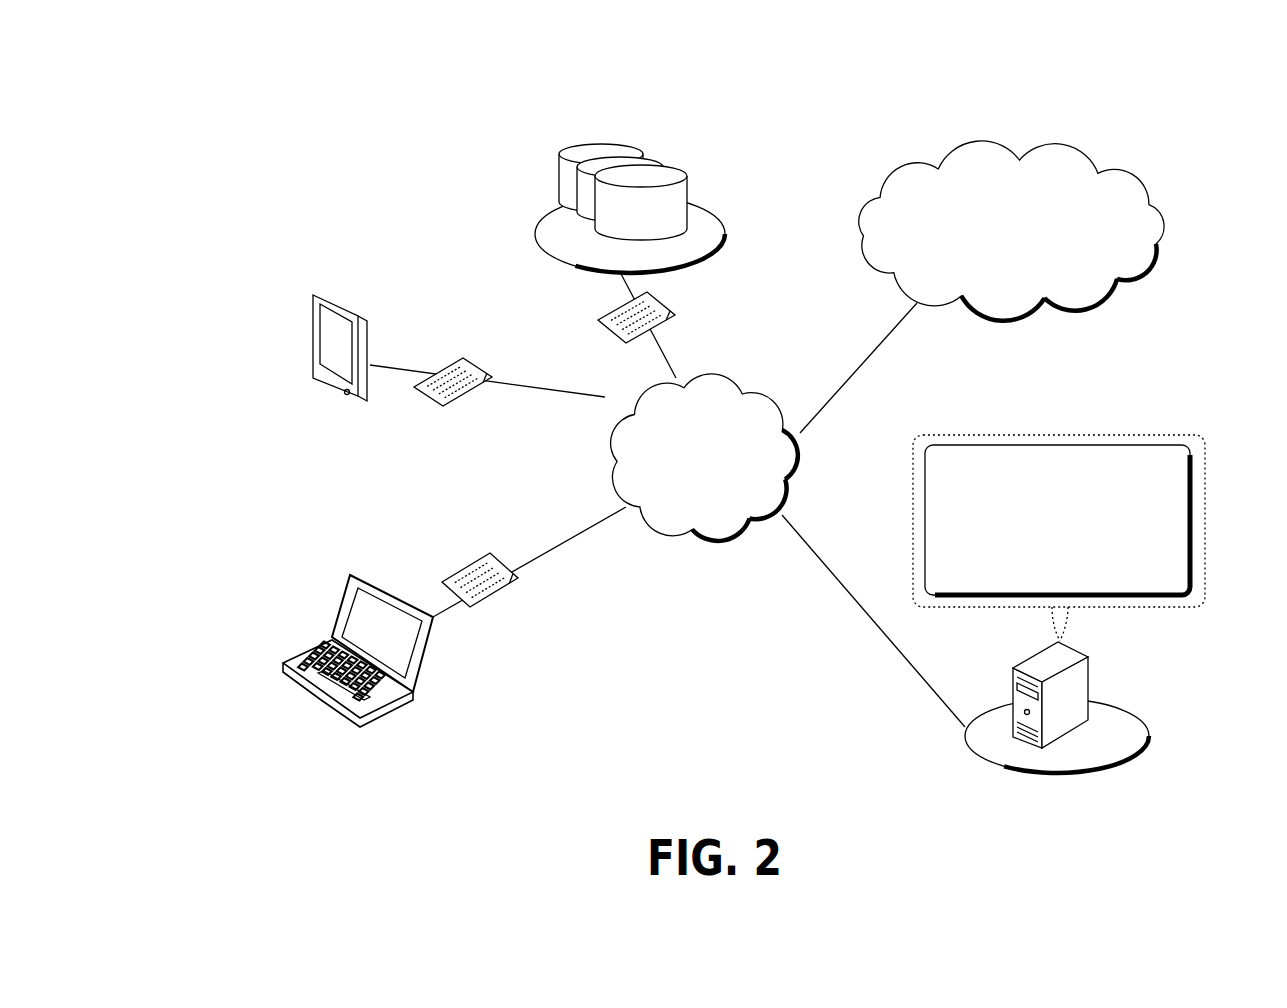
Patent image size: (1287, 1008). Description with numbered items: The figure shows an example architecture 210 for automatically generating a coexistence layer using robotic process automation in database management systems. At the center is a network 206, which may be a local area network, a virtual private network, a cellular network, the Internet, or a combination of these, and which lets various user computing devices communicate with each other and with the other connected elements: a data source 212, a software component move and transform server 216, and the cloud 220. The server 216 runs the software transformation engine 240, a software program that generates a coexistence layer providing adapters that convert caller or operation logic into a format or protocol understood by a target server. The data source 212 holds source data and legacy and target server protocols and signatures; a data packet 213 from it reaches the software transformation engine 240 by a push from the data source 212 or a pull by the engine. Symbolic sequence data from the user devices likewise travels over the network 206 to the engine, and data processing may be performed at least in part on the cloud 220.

The architecture 210 is at (250, 101).
The data source 212 is at (710, 211).
The data packet 213 is at (672, 302).
The network 206 is at (607, 440).
The cloud 220 is at (1133, 298).
The software transformation engine 240 is at (1077, 560).
The software component move and transform server 216 is at (1131, 715).